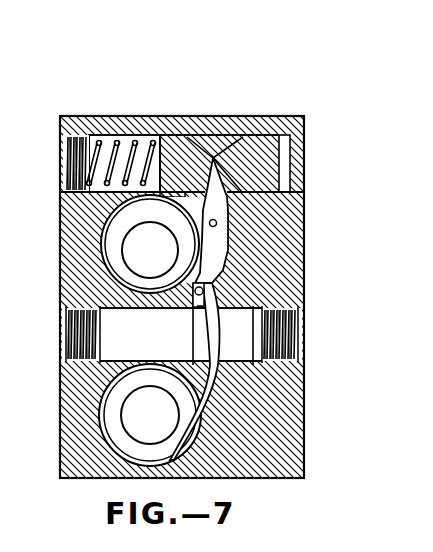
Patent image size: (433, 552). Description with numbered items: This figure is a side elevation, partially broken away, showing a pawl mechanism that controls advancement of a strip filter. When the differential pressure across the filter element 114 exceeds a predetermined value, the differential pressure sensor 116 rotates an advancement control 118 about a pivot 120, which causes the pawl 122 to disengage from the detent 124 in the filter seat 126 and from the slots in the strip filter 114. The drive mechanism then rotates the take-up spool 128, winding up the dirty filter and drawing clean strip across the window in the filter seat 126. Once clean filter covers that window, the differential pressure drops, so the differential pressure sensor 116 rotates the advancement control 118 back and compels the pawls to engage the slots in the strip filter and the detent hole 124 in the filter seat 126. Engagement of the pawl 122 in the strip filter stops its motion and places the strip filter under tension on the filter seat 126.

The filter element 114 is at (197, 400).
The differential pressure sensor 116 is at (291, 163).
The advancement control 118 is at (235, 247).
The pivot 120 is at (214, 160).
The pawl 122 is at (215, 292).
The detent 124 is at (205, 284).
The filter seat 126 is at (197, 308).
The take-up spool 128 is at (123, 236).